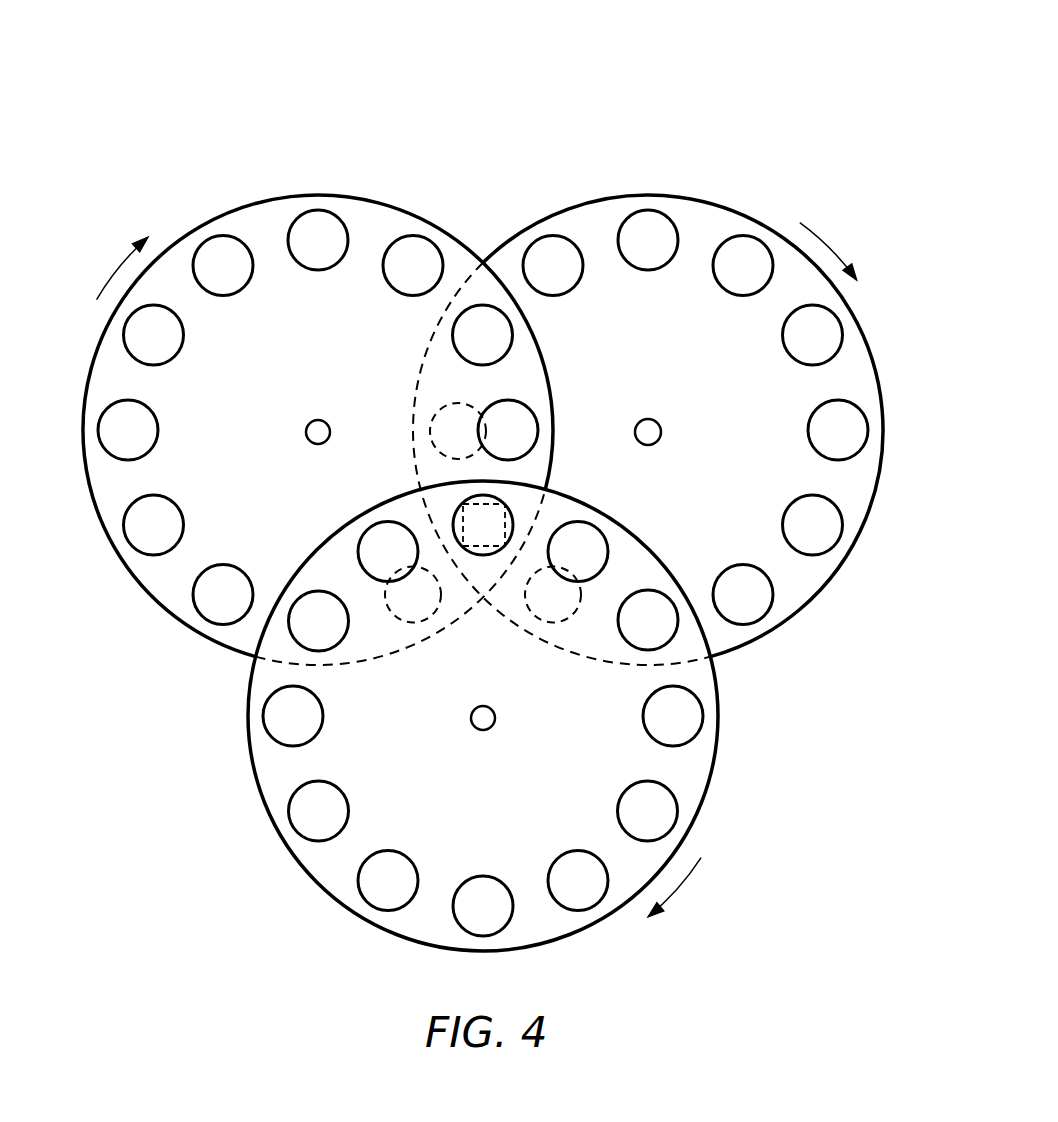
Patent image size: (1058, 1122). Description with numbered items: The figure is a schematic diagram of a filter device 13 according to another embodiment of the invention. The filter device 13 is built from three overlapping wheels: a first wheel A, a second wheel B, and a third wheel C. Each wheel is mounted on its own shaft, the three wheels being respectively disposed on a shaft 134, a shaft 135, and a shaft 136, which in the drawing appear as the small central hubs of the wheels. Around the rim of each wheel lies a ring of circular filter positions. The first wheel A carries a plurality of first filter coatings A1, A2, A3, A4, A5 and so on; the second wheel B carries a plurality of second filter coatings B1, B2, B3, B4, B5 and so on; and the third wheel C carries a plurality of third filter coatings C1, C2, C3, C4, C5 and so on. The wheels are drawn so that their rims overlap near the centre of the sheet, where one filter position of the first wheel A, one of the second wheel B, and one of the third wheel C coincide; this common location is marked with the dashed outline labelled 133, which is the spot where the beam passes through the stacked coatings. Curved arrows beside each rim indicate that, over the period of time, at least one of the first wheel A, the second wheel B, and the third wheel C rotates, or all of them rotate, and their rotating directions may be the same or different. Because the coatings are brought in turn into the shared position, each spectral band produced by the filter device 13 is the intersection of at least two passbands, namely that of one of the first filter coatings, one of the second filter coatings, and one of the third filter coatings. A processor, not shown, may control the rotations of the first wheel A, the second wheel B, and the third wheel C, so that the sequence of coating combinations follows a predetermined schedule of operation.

The filter device 13 is at (852, 100).
The first wheel A is at (292, 882).
The second wheel B is at (258, 190).
The third wheel C is at (727, 195).
The common filter position (lambda 1) 133 is at (462, 524).
The shaft 134 is at (306, 432).
The shaft 135 is at (655, 430).
The shaft 136 is at (496, 718).
The first filter coating A1 is at (483, 555).
The first filter coating A2 is at (400, 585).
The first filter coating A3 is at (289, 621).
The first filter coating A4 is at (263, 718).
The first filter coating A5 is at (289, 815).
The second filter coating B1 is at (462, 520).
The second filter coating B2 is at (489, 409).
The second filter coating B3 is at (453, 335).
The second filter coating B4 is at (414, 236).
The second filter coating B5 is at (318, 210).
The third filter coating C1 is at (506, 520).
The third filter coating C2 is at (583, 595).
The third filter coating C3 is at (672, 640).
The third filter coating C4 is at (773, 597).
The third filter coating C5 is at (843, 530).